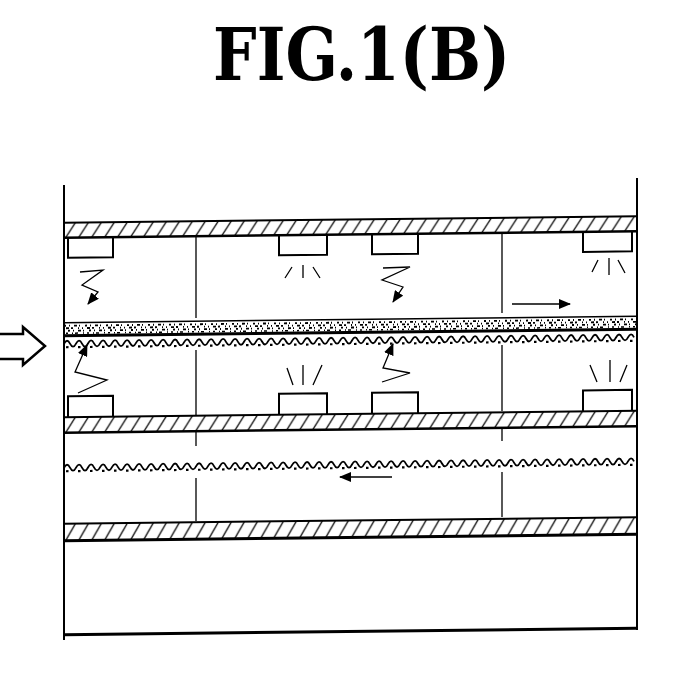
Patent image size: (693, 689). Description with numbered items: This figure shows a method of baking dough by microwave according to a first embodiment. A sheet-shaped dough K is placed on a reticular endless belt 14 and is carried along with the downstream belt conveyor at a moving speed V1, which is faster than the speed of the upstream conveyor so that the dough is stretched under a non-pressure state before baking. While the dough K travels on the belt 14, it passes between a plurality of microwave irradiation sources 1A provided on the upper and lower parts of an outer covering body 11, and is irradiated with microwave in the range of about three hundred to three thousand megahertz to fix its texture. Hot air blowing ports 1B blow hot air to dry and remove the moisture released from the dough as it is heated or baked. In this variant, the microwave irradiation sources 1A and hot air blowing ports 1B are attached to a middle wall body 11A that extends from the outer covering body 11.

The outer covering body 11 is at (460, 220).
The middle wall body 11A is at (253, 420).
The microwave irradiation source 1A is at (393, 236).
The hot air blowing port 1B is at (300, 237).
The dough K is at (231, 321).
The reticular endless belt 14 is at (621, 341).
The moving speed of downstream belt conveyor V1 is at (541, 285).